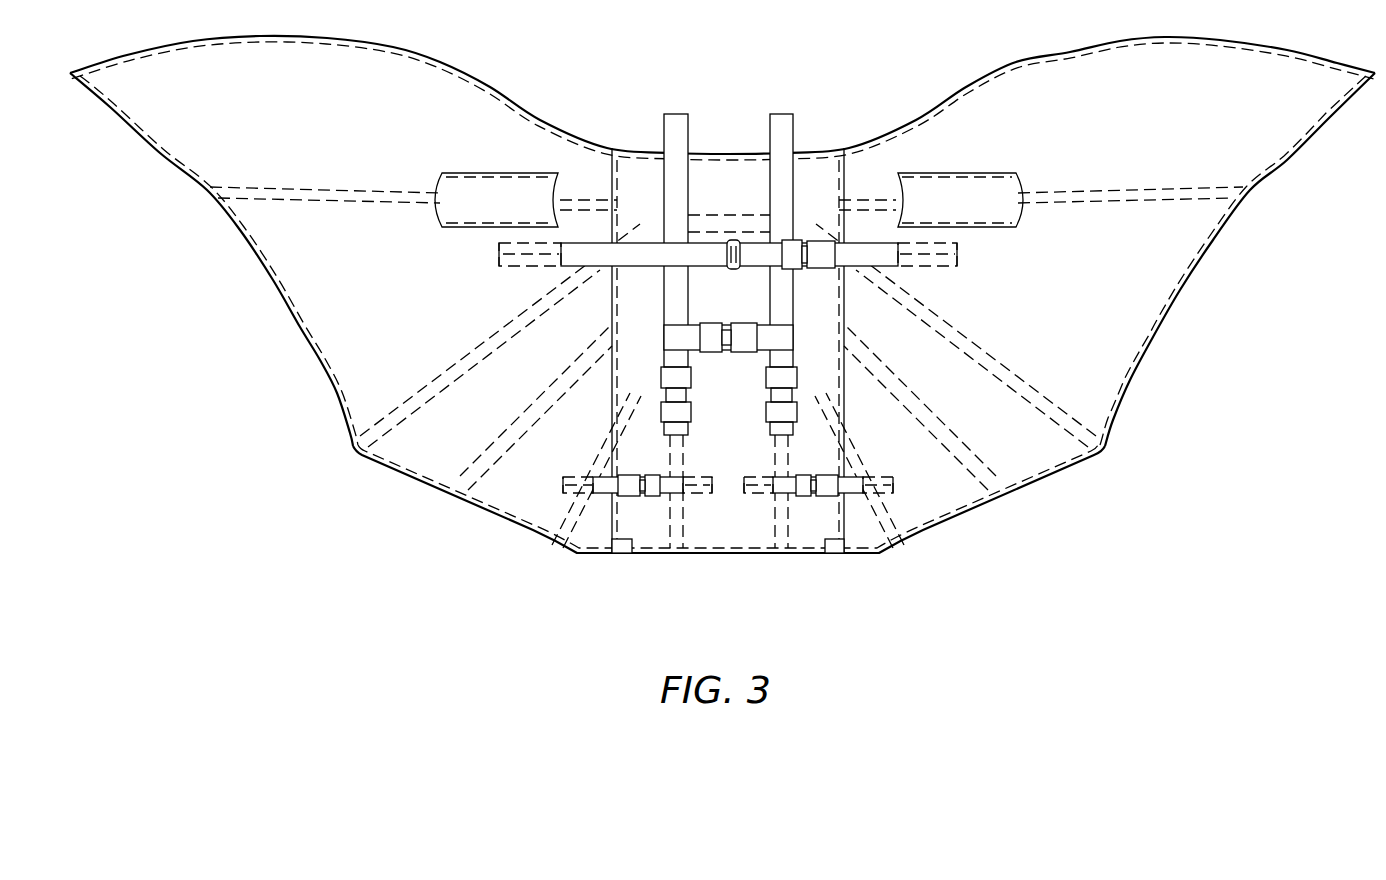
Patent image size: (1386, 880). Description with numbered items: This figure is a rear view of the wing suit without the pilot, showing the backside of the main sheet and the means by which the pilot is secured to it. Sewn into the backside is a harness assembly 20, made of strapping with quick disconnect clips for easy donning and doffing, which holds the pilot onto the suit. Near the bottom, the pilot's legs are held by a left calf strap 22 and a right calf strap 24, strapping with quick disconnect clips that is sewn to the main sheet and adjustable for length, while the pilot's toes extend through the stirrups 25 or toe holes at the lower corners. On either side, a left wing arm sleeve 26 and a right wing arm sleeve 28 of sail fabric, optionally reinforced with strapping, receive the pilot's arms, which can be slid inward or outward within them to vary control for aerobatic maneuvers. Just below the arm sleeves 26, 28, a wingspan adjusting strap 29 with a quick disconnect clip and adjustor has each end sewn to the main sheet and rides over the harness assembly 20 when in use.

The harness assembly 20 is at (785, 113).
The left calf strap 22 is at (563, 478).
The right calf strap 24 is at (895, 477).
The stirrups 25 is at (620, 555).
The left wing arm sleeve 26 is at (512, 212).
The right wing arm sleeve 28 is at (971, 212).
The wingspan adjusting strap 29 is at (958, 257).